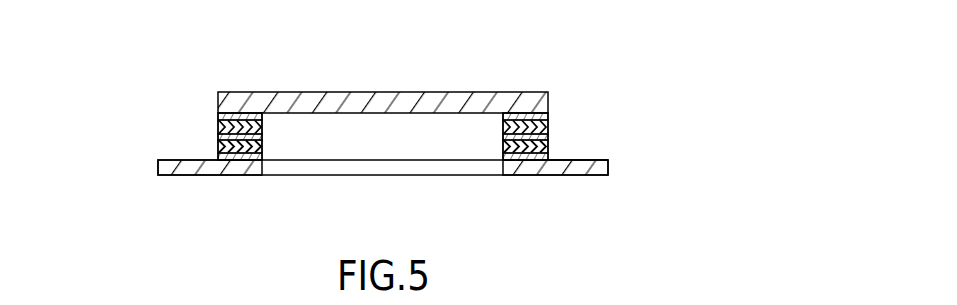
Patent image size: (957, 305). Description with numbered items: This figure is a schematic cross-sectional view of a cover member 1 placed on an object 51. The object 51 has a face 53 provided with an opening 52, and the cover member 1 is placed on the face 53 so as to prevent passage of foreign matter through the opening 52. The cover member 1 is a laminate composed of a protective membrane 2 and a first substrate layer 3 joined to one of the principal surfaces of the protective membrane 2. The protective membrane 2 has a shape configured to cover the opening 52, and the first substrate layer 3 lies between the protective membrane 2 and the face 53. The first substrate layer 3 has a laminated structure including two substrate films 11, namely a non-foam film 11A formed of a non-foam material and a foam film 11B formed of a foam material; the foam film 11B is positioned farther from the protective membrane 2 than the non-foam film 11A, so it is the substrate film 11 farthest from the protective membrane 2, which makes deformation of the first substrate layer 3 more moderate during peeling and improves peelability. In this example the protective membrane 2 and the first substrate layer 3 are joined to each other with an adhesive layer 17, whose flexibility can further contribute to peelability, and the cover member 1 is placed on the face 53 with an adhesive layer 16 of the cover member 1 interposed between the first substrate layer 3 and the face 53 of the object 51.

The cover member 1 is at (350, 100).
The protective membrane 2 is at (376, 106).
The first substrate layer 3 is at (310, 122).
The substrate film 11 is at (310, 124).
The non-foam film 11A is at (218, 128).
The foam film 11B is at (218, 143).
The adhesive layer 16 is at (218, 157).
The adhesive layer 17 is at (218, 117).
The object 51 is at (601, 167).
The opening 52 is at (388, 166).
The face 53 is at (602, 160).